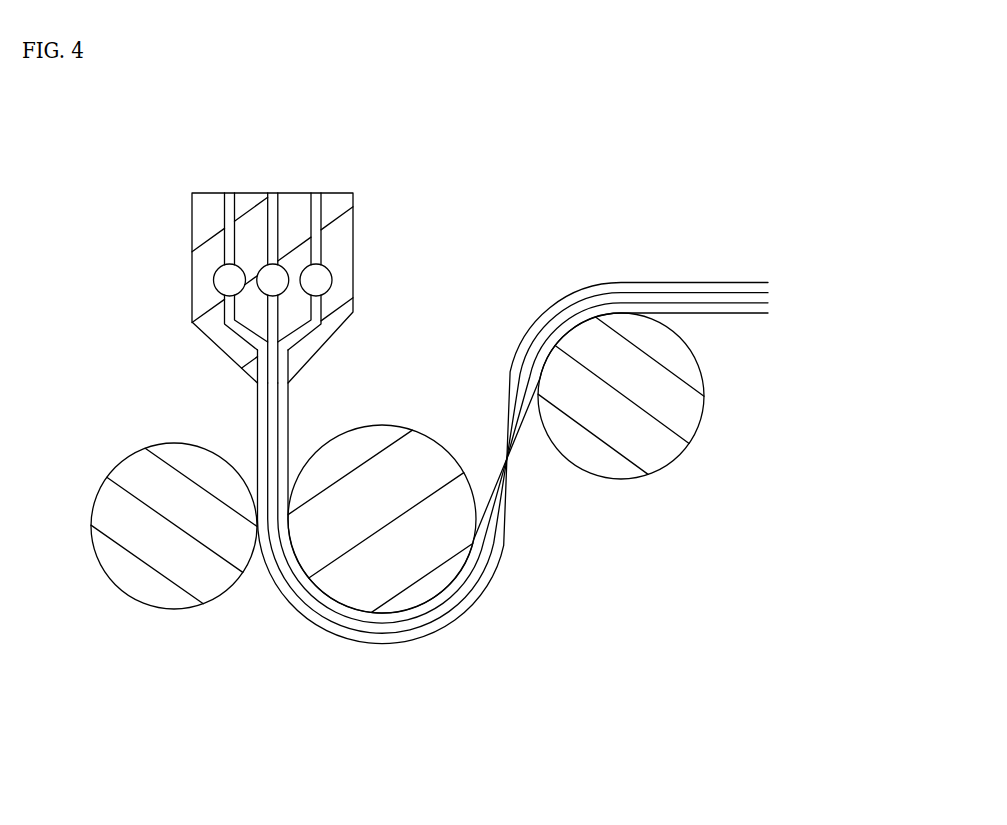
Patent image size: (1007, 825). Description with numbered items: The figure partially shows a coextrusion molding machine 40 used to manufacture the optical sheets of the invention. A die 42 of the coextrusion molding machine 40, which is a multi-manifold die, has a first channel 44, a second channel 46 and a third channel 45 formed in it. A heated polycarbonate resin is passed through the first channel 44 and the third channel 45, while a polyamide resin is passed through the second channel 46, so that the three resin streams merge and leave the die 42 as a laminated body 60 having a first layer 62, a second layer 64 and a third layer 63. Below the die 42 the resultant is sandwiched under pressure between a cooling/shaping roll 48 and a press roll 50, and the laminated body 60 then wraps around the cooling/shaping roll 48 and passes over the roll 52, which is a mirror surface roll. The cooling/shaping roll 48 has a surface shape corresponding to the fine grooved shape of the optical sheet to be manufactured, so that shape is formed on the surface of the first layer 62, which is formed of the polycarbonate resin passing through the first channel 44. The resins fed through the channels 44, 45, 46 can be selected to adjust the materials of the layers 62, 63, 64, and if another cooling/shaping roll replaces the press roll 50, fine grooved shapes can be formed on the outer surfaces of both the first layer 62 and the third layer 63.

The coextrusion molding machine 40 is at (409, 175).
The die 42 is at (350, 270).
The first channel 44 is at (315, 197).
The third channel 45 is at (230, 195).
The second channel 46 is at (273, 197).
The cooling/shaping roll 48 is at (427, 457).
The press roll 50 is at (147, 478).
The roll 52 is at (657, 450).
The laminated body 60 is at (763, 281).
The first layer 62 is at (768, 285).
The third layer 63 is at (767, 308).
The second layer 64 is at (768, 298).